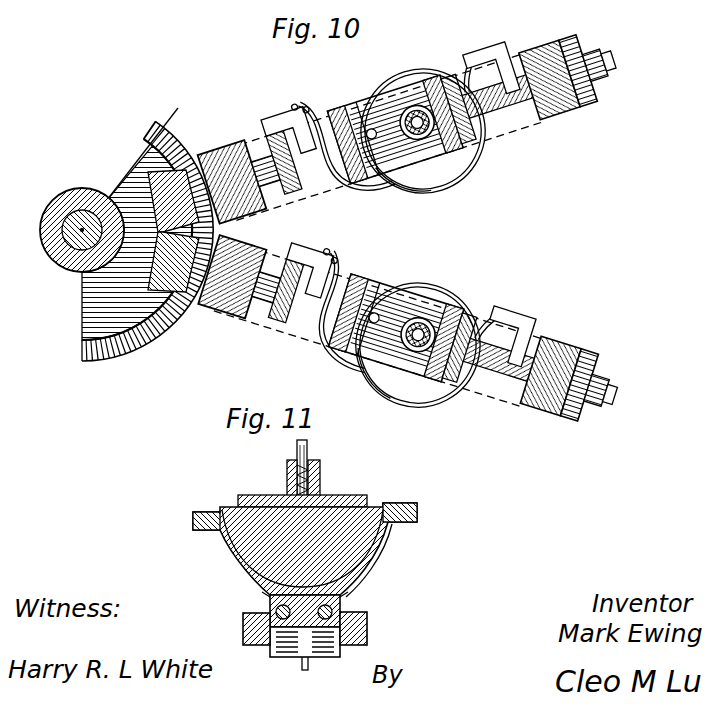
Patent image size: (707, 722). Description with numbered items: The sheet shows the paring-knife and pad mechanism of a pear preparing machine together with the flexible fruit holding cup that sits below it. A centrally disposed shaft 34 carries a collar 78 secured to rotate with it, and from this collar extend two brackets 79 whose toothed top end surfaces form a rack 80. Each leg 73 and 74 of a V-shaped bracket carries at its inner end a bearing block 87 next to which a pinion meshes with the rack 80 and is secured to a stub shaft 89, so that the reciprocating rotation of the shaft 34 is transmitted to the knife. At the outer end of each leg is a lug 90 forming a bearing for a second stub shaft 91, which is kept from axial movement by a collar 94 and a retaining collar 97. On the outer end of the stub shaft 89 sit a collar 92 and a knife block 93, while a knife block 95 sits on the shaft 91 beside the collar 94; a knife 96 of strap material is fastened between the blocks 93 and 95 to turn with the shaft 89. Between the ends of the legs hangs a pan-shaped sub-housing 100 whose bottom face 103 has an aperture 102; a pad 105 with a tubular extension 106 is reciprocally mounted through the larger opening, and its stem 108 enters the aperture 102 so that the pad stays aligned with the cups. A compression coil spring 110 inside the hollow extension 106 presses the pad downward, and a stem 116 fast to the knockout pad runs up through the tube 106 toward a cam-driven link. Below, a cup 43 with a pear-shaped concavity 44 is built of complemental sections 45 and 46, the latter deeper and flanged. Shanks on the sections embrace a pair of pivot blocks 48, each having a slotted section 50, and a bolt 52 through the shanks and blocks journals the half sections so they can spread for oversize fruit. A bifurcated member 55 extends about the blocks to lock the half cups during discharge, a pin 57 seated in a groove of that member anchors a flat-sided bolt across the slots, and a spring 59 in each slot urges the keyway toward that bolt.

In FIG. 10, the shaft 34 is at (80, 207).
In FIG. 10, the collar 78 is at (55, 255).
In FIG. 10, the bracket 79 is at (95, 312).
In FIG. 10, the rack 80 is at (158, 125).
In FIG. 10, the stub shaft 89 is at (148, 285).
In FIG. 10, the leg 74 is at (228, 150).
In FIG. 10, the leg 73 is at (226, 316).
In FIG. 10, the bearing block 87 is at (268, 180).
In FIG. 10, the collar 92 is at (288, 185).
In FIG. 10, the knife block 93 is at (316, 180).
In FIG. 10, the sub-housing 100 is at (320, 340).
In FIG. 10, the stem 108 is at (375, 316).
In FIG. 10, the pad 105 is at (400, 382).
In FIG. 10, the bottom face 103 is at (422, 302).
In FIG. 10, the aperture 102 is at (368, 336).
In FIG. 10, the tubular extension 106 is at (420, 340).
In FIG. 10, the compression coil spring 110 is at (413, 358).
In FIG. 10, the stem 116 is at (440, 292).
In FIG. 10, the knife 96 is at (400, 373).
In FIG. 10, the knife block 95 is at (520, 332).
In FIG. 10, the collar 94 is at (538, 350).
In FIG. 10, the lug 90 is at (575, 350).
In FIG. 10, the retaining collar 97 is at (604, 380).
In FIG. 10, the stub shaft 91 is at (612, 393).
In FIG. 11, the cup 43 is at (214, 562).
In FIG. 11, the concavity 44 is at (260, 557).
In FIG. 11, the section 45 is at (213, 532).
In FIG. 11, the section 46 is at (360, 585).
In FIG. 11, the pivot block 48 is at (306, 642).
In FIG. 11, the slotted section 50 is at (340, 626).
In FIG. 11, the bolt 52 is at (332, 608).
In FIG. 11, the bifurcated member 55 is at (368, 634).
In FIG. 11, the pin 57 is at (350, 598).
In FIG. 11, the spring 59 is at (300, 637).